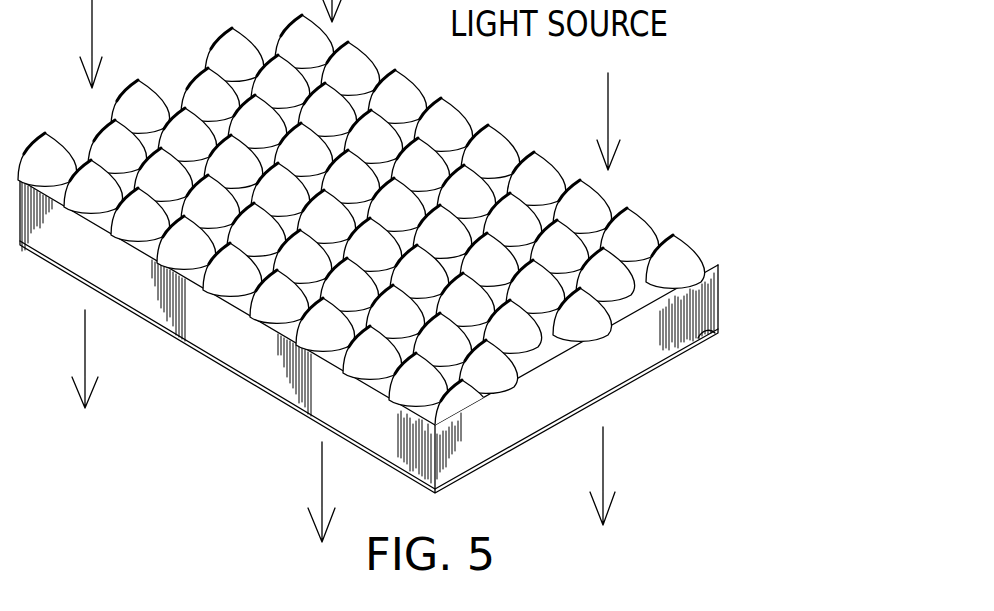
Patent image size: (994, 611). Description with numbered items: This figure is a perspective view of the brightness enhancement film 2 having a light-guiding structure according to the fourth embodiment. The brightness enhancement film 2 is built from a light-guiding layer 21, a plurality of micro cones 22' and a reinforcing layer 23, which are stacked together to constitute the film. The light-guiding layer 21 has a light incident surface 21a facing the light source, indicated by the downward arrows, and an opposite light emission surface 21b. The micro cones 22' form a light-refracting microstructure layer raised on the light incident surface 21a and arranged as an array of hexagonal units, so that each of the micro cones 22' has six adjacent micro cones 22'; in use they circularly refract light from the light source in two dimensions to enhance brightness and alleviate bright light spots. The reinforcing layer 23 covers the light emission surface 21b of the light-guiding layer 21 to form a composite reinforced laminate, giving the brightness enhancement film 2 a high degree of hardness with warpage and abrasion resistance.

The brightness enhancement film 2 is at (186, 357).
The light-guiding layer 21 is at (713, 305).
The light incident surface 21a is at (718, 265).
The light emission surface 21b is at (713, 334).
The micro cones 22' is at (698, 235).
The reinforcing layer 23 is at (610, 398).